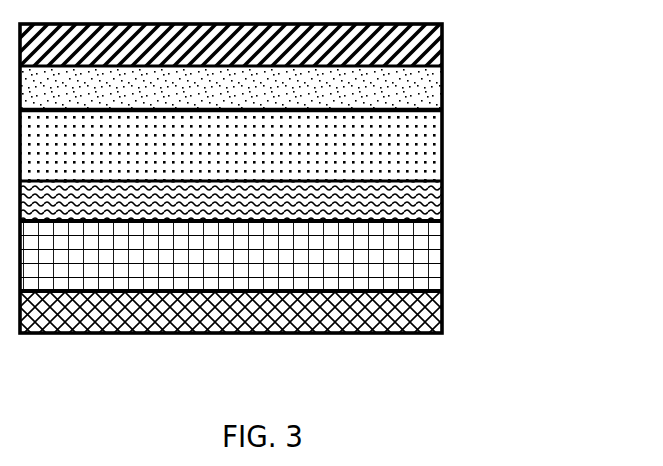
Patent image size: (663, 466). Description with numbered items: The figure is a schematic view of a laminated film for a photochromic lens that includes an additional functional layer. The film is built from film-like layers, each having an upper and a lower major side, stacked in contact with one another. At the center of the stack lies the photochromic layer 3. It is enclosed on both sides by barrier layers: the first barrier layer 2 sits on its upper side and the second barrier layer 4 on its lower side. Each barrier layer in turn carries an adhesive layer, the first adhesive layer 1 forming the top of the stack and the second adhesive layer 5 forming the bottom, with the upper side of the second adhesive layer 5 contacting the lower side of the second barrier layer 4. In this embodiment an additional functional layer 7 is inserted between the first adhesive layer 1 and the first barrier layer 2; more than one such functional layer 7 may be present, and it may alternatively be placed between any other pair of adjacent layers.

The first adhesive layer 1 is at (443, 44).
The additional functional layer 7 is at (443, 87).
The first barrier layer 2 is at (443, 147).
The photochromic layer 3 is at (443, 200).
The second barrier layer 4 is at (443, 258).
The second adhesive layer 5 is at (443, 305).